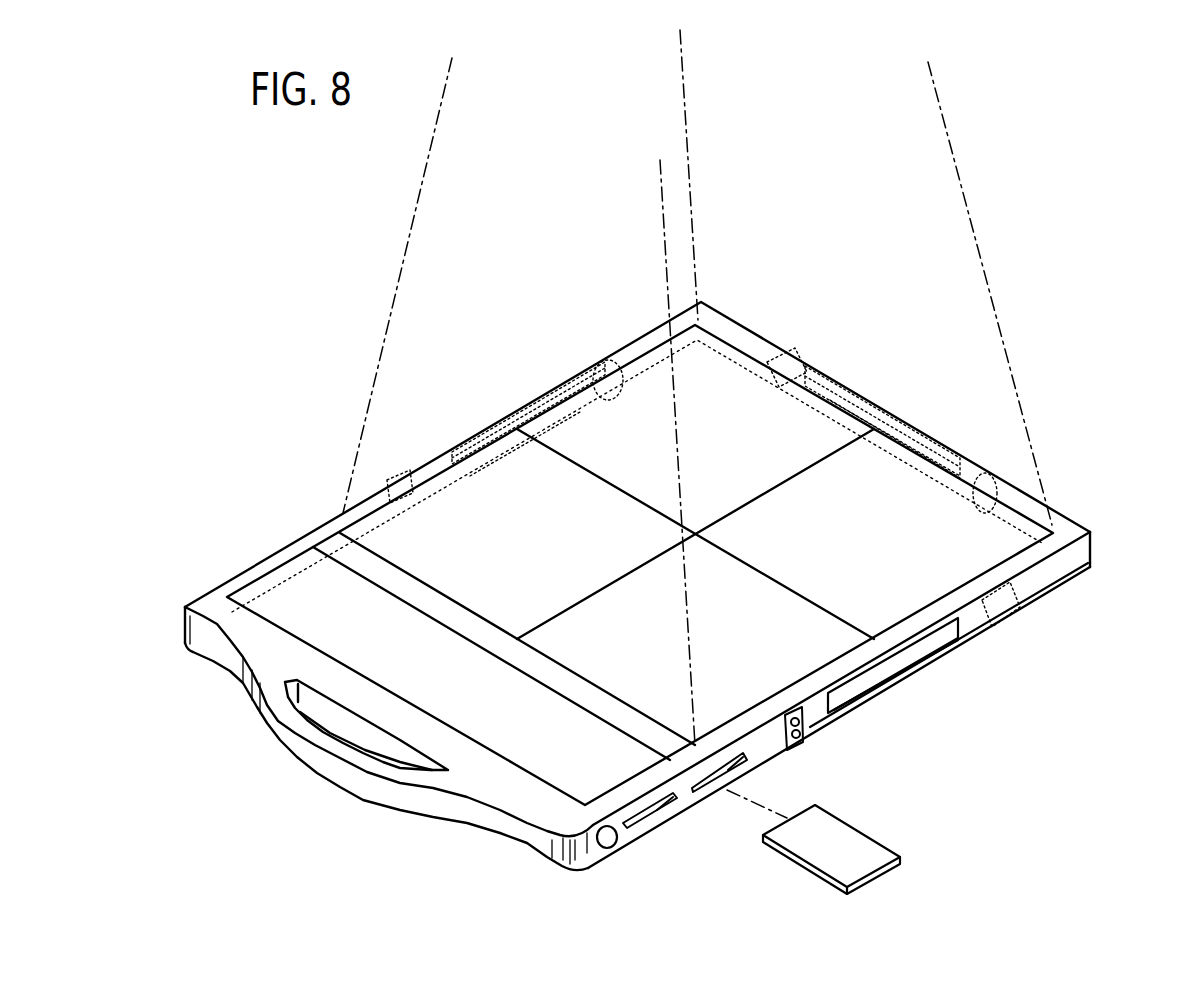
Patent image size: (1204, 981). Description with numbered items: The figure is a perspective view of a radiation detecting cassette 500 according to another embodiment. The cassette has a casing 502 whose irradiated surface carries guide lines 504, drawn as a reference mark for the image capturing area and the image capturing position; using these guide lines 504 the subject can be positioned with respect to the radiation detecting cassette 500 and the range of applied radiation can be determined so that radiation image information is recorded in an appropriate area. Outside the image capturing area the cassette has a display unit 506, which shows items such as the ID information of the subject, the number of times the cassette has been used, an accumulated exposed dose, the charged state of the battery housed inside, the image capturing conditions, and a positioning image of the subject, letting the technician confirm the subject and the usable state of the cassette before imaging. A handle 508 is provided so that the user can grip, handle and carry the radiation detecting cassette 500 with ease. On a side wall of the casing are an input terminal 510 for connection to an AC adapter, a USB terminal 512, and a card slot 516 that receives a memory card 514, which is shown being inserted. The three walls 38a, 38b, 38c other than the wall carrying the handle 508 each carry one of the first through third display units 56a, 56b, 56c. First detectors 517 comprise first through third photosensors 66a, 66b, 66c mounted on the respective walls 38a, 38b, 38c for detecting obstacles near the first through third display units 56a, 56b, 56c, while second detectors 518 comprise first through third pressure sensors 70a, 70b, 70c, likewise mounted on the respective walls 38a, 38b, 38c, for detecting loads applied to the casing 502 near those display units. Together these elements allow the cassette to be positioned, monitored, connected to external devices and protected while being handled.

The radiation detecting cassette 500 is at (300, 528).
The casing 502 is at (1007, 543).
The guide lines 504 is at (742, 352).
The display unit 506 is at (260, 598).
The handle 508 is at (363, 790).
The input terminal 510 is at (611, 848).
The USB terminal 512 is at (662, 812).
The memory card 514 is at (853, 841).
The card slot 516 is at (708, 787).
The first detectors 517 is at (923, 678).
The second detectors 518 is at (984, 584).
The first wall 38a is at (1053, 578).
The second wall 38b is at (1036, 476).
The third wall 38c is at (653, 333).
The first display unit 56a is at (843, 695).
The second display unit 56b is at (882, 398).
The third display unit 56c is at (518, 404).
The first photosensor 66a is at (797, 741).
The second photosensor 66b is at (988, 470).
The third photosensor 66c is at (590, 365).
The first pressure sensor 70a is at (1012, 627).
The second pressure sensor 70b is at (800, 353).
The third pressure sensor 70c is at (403, 475).